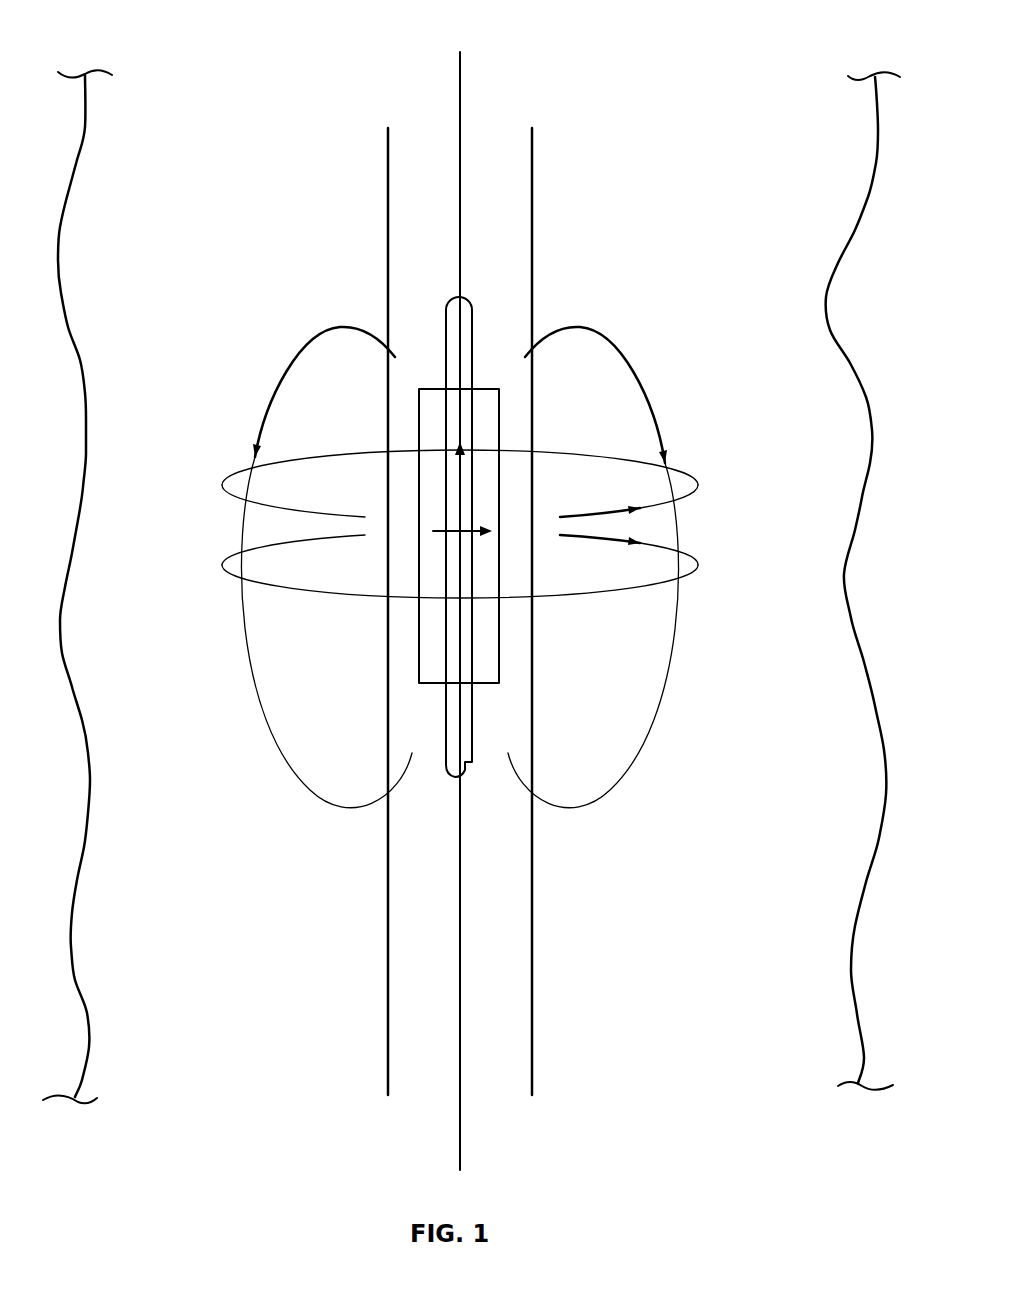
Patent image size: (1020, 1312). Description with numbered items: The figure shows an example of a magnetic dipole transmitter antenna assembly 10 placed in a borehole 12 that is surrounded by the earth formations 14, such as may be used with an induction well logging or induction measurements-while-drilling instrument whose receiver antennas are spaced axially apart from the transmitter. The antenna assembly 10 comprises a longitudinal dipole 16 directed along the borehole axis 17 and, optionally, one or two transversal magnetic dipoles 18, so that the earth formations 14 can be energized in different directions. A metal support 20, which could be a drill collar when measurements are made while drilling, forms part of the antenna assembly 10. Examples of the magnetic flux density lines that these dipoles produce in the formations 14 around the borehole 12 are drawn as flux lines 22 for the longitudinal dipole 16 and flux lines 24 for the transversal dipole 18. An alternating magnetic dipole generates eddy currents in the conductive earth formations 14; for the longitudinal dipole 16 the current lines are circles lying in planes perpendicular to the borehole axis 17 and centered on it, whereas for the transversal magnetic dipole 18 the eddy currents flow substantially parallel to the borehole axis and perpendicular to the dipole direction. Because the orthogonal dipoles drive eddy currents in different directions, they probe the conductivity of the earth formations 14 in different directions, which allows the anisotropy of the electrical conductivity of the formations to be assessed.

The magnetic dipole transmitter antenna assembly 10 is at (498, 635).
The borehole 12 is at (485, 142).
The earth formations 14 is at (800, 55).
The longitudinal dipole 16 is at (460, 480).
The borehole axis 17 is at (460, 89).
The transversal magnetic dipole 18 is at (433, 531).
The metal support 20 is at (461, 300).
The magnetic flux density lines 22 is at (570, 323).
The magnetic flux density lines 24 is at (292, 598).